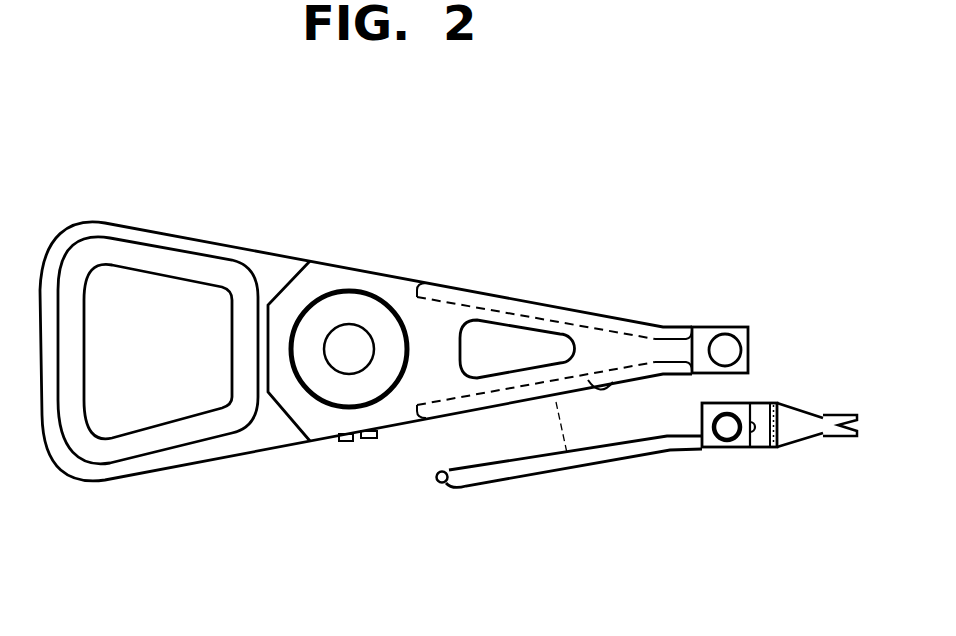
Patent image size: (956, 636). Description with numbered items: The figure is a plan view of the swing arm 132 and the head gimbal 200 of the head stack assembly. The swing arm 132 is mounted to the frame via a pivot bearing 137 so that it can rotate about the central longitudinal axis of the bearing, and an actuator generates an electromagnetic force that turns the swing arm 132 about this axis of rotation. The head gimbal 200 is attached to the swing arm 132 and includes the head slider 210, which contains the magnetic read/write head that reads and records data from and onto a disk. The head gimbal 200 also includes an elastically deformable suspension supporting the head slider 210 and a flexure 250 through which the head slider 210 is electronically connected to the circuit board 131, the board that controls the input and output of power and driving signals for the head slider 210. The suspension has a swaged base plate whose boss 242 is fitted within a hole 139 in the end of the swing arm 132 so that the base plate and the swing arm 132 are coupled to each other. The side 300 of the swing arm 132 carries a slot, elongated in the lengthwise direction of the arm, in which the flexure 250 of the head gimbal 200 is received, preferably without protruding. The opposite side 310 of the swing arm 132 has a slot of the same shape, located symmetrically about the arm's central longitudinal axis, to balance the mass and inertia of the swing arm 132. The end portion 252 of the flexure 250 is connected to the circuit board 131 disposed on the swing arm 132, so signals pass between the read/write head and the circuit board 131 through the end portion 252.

The swing arm 132 is at (428, 317).
The pivot bearing 137 is at (350, 332).
The hole 139 is at (723, 334).
The side of the swing arm 310 is at (528, 310).
The side of the swing arm 300 is at (613, 383).
The circuit board 131 is at (343, 442).
The flexure 250 is at (558, 466).
The end portion of the flexure 252 is at (441, 484).
The head gimbal 200 is at (722, 470).
The boss 242 is at (732, 430).
The head slider 210 is at (848, 438).